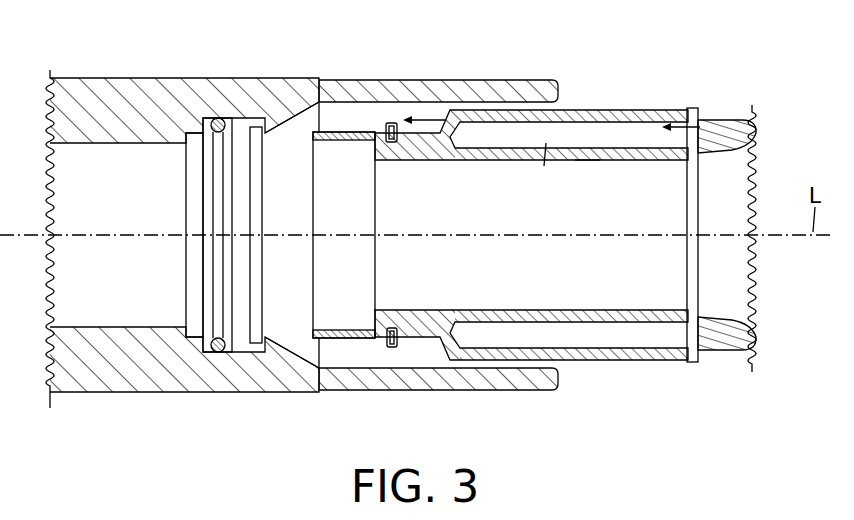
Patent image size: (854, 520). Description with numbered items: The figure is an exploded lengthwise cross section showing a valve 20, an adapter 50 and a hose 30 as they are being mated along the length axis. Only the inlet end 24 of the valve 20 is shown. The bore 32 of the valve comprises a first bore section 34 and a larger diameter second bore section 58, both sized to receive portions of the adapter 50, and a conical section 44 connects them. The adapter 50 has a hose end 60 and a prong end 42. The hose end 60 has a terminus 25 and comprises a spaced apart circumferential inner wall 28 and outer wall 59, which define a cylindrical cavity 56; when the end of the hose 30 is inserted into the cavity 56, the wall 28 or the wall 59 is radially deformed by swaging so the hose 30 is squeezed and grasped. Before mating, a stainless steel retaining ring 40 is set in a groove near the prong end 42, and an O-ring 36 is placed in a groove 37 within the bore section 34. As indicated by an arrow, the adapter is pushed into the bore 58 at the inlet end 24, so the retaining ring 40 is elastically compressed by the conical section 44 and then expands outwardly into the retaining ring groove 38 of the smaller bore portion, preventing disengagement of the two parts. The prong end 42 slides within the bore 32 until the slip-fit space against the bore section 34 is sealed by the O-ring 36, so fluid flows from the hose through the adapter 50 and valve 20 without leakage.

The valve 20 is at (137, 73).
The valve inlet end 24 is at (483, 79).
The terminus 25 is at (693, 120).
The inner wall 28 is at (575, 311).
The hose 30 is at (738, 118).
The bore 32 is at (58, 268).
The first bore section 34 is at (187, 141).
The O-ring 36 is at (213, 255).
The groove 37 is at (228, 140).
The retaining ring groove 38 is at (265, 338).
The retaining ring 40 is at (390, 347).
The prong end 42 is at (333, 130).
The conical section 44 is at (288, 347).
The adapter 50 is at (614, 375).
The cylindrical cavity 56 is at (549, 142).
The second bore section 58 is at (387, 103).
The outer wall 59 is at (597, 109).
The hose end 60 is at (588, 166).